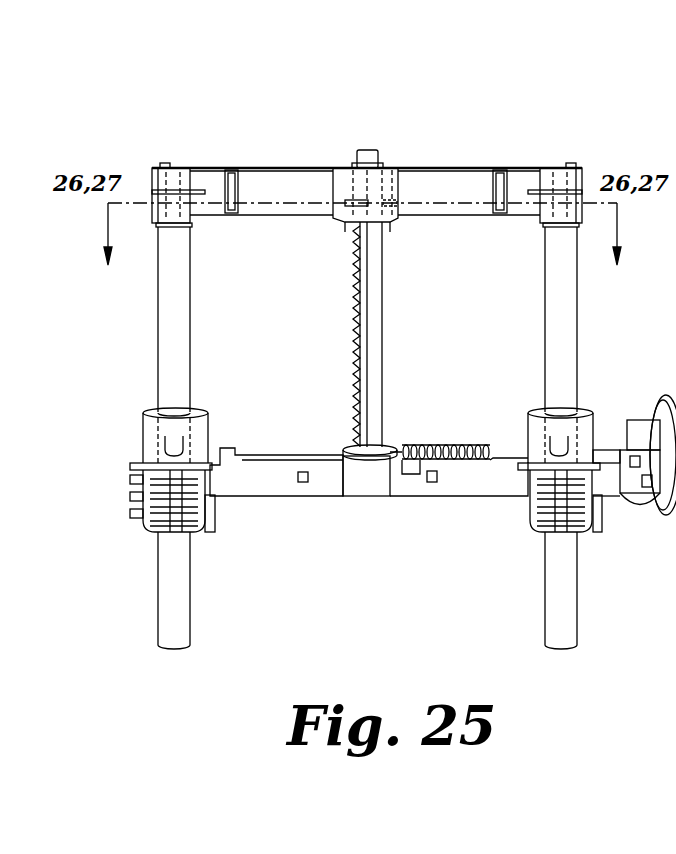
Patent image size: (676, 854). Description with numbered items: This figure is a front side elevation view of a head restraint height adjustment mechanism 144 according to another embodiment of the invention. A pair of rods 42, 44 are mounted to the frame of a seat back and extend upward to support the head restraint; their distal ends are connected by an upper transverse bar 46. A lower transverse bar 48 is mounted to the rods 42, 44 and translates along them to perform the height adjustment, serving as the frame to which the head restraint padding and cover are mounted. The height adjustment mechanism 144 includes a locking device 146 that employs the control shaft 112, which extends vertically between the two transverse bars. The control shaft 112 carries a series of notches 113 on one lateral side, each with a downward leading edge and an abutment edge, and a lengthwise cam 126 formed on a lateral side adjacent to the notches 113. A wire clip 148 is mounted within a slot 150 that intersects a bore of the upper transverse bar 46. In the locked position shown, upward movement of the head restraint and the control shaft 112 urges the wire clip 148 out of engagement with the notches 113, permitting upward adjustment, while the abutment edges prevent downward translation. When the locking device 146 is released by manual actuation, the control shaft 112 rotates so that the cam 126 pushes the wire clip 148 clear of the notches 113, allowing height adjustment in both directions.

The height adjustment mechanism 144 is at (474, 96).
The upper transverse bar 46 is at (512, 167).
The wire clip 148 is at (400, 185).
The slot 150 is at (350, 200).
The control shaft 112 is at (385, 337).
The cam 126 is at (367, 290).
The notches 113 is at (355, 350).
The locking device 146 is at (398, 385).
The rod 44 is at (192, 590).
The rod 42 is at (578, 588).
The lower transverse bar 48 is at (455, 497).